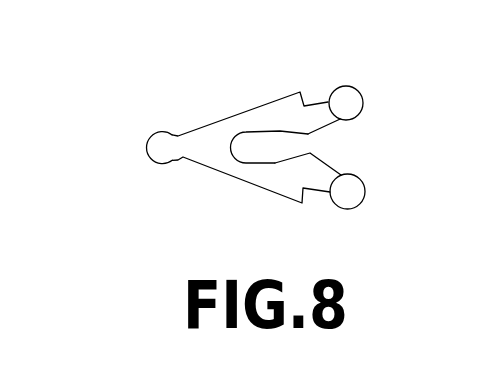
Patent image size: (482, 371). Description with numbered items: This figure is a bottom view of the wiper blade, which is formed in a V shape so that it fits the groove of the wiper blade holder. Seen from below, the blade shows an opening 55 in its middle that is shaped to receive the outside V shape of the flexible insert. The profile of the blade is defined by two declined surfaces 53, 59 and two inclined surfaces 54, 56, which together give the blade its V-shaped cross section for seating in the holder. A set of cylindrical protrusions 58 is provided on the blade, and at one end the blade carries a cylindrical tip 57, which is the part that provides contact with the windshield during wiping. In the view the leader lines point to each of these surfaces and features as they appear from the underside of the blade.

The declined surface 53 is at (321, 101).
The inclined surface 54 is at (279, 132).
The opening 55 is at (246, 148).
The inclined surface 56 is at (192, 163).
The cylindrical tip 57 is at (145, 145).
The cylindrical protrusions 58 is at (364, 101).
The declined surface 59 is at (331, 123).